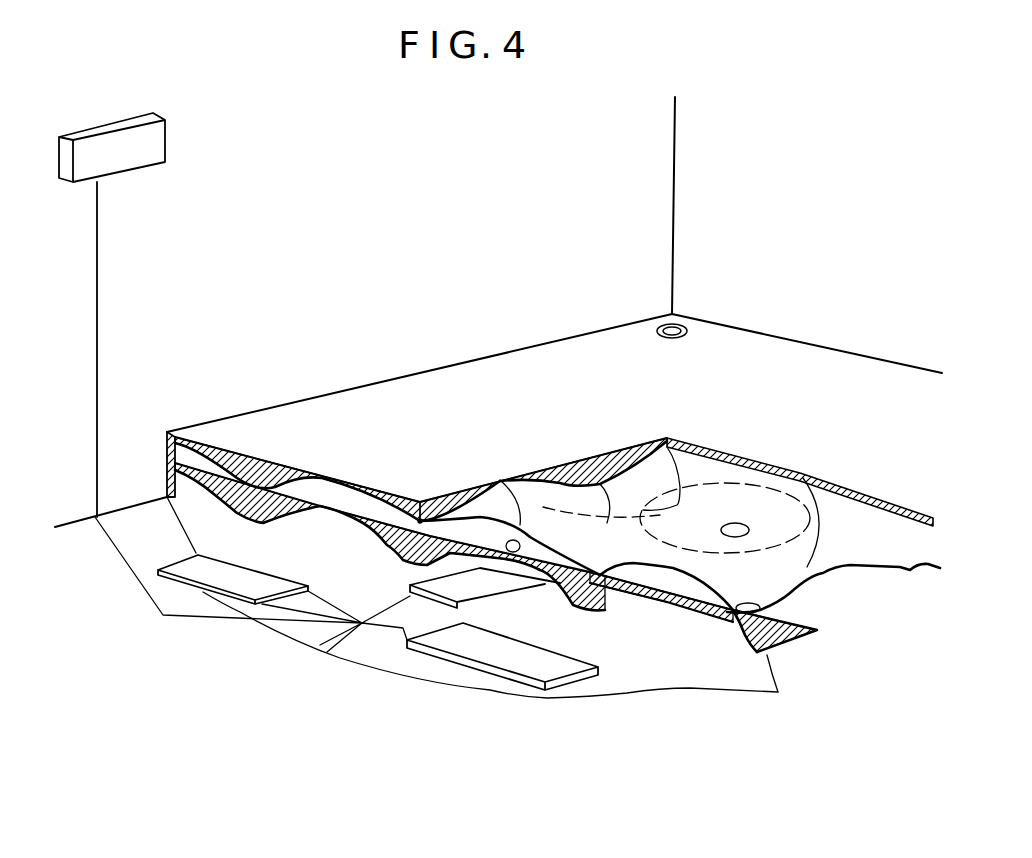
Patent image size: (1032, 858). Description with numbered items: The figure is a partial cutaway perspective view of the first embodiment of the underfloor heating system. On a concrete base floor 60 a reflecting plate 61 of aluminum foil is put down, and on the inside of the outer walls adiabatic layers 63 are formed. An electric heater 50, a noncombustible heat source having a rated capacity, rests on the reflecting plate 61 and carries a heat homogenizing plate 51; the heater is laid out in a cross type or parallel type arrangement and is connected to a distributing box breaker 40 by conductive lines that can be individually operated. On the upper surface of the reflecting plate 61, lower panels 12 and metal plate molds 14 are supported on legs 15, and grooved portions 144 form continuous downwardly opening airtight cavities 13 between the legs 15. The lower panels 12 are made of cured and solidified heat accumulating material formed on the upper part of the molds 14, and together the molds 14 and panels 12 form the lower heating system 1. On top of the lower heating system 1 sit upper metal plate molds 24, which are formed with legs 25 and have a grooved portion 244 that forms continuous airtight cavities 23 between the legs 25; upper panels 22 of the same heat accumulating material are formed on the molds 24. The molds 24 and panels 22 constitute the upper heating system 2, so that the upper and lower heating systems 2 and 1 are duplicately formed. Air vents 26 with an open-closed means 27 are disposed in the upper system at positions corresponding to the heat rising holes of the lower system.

The lower heating system 1 is at (504, 572).
The upper heating system 2 is at (810, 371).
The lower panel 12 is at (533, 560).
The airtight cavity 13 is at (303, 537).
The metal plate mold 14 is at (688, 617).
The grooved portion 144 is at (600, 605).
The leg 15 is at (767, 658).
The upper panel 22 is at (580, 457).
The airtight cavity 23 is at (350, 497).
The upper metal plate mold 24 is at (801, 588).
The grooved portion 244 is at (800, 520).
The leg 25 is at (722, 633).
The air vent 26 is at (687, 325).
The open-closed means 27 is at (672, 318).
The distributing box breaker 40 is at (158, 145).
The electric heater 50 is at (247, 583).
The heat homogenizing plate 51 is at (475, 582).
The concrete base floor 60 is at (143, 558).
The reflecting plate 61 is at (297, 647).
The adiabatic layer 63 is at (167, 483).